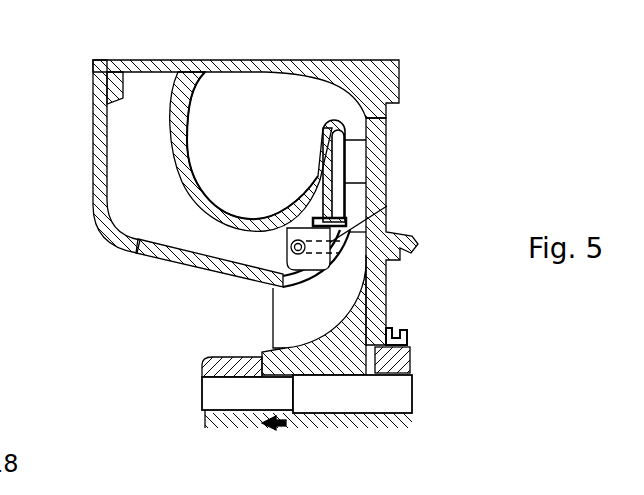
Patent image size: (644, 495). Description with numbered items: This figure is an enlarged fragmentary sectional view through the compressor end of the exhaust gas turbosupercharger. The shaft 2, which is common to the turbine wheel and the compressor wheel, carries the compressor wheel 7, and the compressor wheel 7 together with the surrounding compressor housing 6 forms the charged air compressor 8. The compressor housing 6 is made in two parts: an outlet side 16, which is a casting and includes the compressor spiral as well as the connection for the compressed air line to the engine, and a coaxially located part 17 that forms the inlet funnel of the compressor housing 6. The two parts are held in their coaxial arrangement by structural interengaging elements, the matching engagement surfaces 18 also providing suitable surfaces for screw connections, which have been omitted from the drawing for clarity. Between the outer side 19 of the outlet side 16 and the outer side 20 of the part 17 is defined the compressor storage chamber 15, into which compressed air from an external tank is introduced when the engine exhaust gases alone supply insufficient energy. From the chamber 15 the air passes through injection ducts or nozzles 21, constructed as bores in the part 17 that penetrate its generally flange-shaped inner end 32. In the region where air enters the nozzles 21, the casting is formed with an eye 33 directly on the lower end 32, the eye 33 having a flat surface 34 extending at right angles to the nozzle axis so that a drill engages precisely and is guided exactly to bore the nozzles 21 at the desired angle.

The shaft 2 is at (343, 397).
The compressor housing 6 is at (88, 192).
The compressor wheel 7 is at (364, 336).
The charged air compressor 8 is at (174, 322).
The compressor storage chamber 15 is at (150, 158).
The outlet side 16 is at (302, 62).
The inlet funnel part 17 is at (132, 244).
The matching engagement surfaces 18 is at (107, 74).
The outer side of part 16 19 is at (160, 110).
The outer side of part 17 20 is at (185, 268).
The injection ducts or nozzles 21 is at (291, 247).
The inner end 32 is at (387, 206).
The eye 33 is at (302, 217).
The flat surface 34 is at (304, 178).